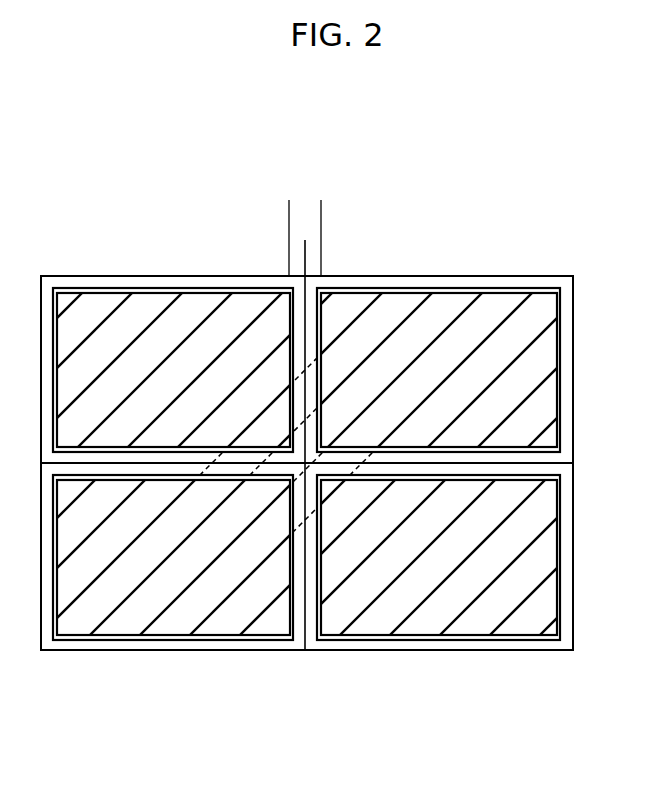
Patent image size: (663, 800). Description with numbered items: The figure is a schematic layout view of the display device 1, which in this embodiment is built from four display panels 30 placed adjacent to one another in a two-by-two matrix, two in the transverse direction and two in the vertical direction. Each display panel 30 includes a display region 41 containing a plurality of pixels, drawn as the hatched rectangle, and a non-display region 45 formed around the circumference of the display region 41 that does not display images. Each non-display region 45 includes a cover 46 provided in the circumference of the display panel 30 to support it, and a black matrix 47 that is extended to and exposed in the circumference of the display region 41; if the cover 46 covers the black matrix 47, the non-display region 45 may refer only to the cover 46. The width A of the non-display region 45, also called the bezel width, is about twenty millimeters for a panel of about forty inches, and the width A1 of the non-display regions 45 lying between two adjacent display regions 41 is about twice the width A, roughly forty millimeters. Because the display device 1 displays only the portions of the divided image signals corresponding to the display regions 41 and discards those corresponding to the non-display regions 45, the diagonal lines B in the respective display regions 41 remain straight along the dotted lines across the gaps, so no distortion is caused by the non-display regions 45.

The display device 1 is at (560, 210).
The display panel 30 is at (120, 201).
The display region 41 is at (122, 310).
The non-display region 45 is at (212, 233).
The cover 46 is at (169, 277).
The black matrix 47 is at (202, 291).
The width of the non-display region A is at (275, 248).
The width of the non-display regions between adjacent display regions A1 is at (289, 205).
The diagonal lines B is at (530, 345).